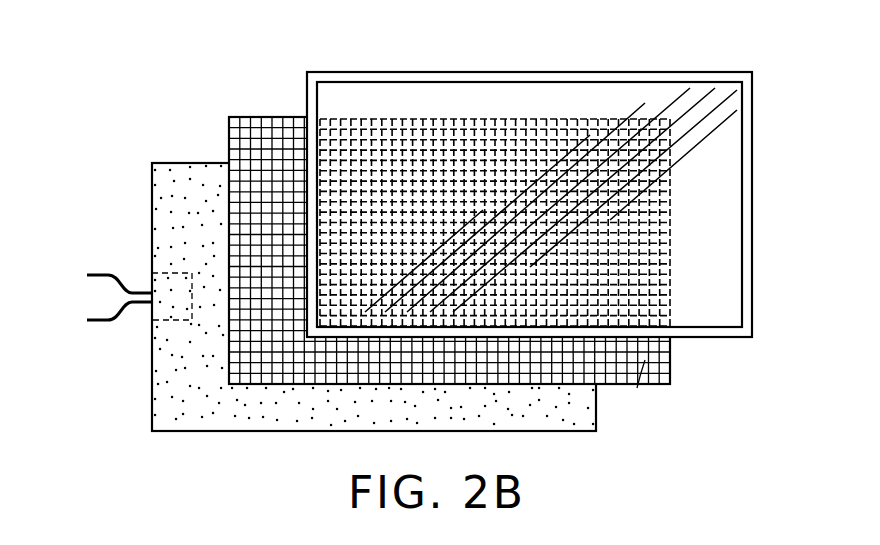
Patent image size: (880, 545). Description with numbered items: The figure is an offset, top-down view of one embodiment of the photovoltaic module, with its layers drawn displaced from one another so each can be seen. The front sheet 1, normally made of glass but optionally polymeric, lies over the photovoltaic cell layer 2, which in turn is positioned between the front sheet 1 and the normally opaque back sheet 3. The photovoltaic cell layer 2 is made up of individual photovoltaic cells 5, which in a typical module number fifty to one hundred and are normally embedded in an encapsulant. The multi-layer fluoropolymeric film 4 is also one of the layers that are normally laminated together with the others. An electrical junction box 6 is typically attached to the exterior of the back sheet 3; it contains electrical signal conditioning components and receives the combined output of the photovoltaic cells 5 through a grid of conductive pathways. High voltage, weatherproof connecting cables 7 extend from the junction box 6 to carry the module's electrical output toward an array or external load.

The front sheet 1 is at (550, 183).
The photovoltaic cell layer 2 is at (262, 117).
The back sheet 3 is at (173, 163).
The multi-layer fluoropolymeric film 4 is at (722, 228).
The photovoltaic cells 5 is at (602, 357).
The electrical junction box 6 is at (165, 273).
The connecting cables 7 is at (102, 318).